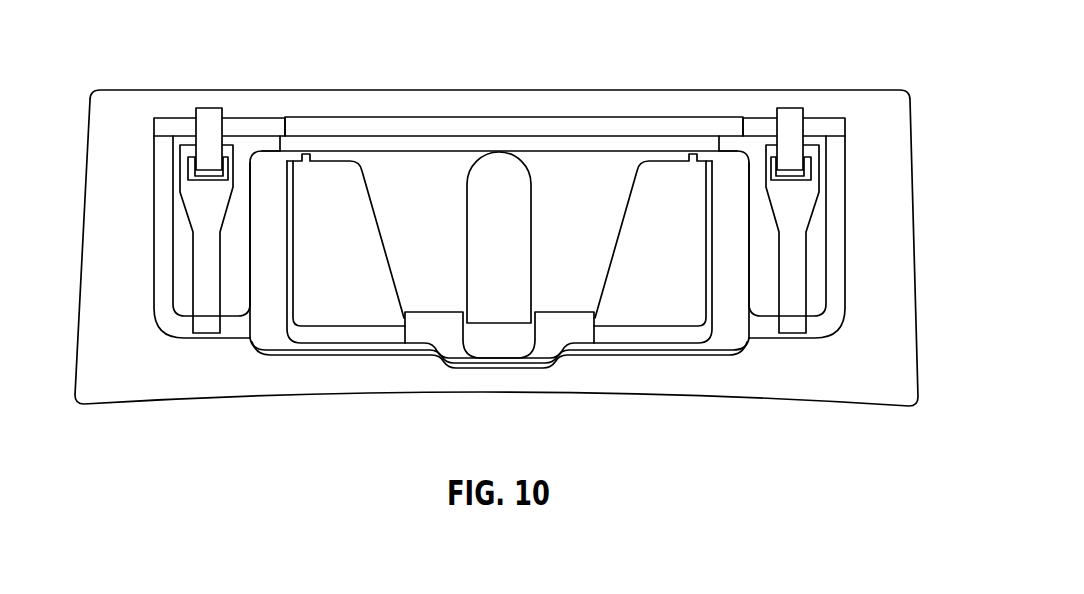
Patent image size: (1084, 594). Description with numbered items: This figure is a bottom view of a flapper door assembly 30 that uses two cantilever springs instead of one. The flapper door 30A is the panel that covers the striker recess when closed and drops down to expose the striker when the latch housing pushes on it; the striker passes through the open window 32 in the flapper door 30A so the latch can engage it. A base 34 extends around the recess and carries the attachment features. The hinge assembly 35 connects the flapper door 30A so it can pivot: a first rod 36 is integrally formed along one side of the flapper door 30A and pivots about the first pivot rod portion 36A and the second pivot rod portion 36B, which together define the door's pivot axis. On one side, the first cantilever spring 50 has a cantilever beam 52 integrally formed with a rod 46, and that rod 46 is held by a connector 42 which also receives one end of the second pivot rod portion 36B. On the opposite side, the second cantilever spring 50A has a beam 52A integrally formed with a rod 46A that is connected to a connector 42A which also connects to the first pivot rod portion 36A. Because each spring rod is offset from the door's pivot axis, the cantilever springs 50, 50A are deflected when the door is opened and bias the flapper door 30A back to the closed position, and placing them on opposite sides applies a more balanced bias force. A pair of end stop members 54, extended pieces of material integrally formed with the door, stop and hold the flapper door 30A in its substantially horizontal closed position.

The flapper door assembly 30 is at (565, 114).
The flapper door 30A is at (595, 245).
The open window 32 is at (498, 198).
The base 34 is at (843, 352).
The hinge assembly 35 is at (236, 90).
The first rod 36 is at (393, 128).
The first pivot rod portion 36A is at (827, 130).
The second pivot rod portion 36B is at (173, 117).
The connector 42 is at (208, 108).
The connector 42A is at (788, 108).
The rod 46 is at (185, 152).
The rod 46A is at (812, 152).
The first cantilever spring 50 is at (176, 242).
The second cantilever spring 50A is at (823, 242).
The cantilever beam 52 is at (208, 200).
The beam 52A is at (790, 199).
The end stop members 54 is at (433, 320).